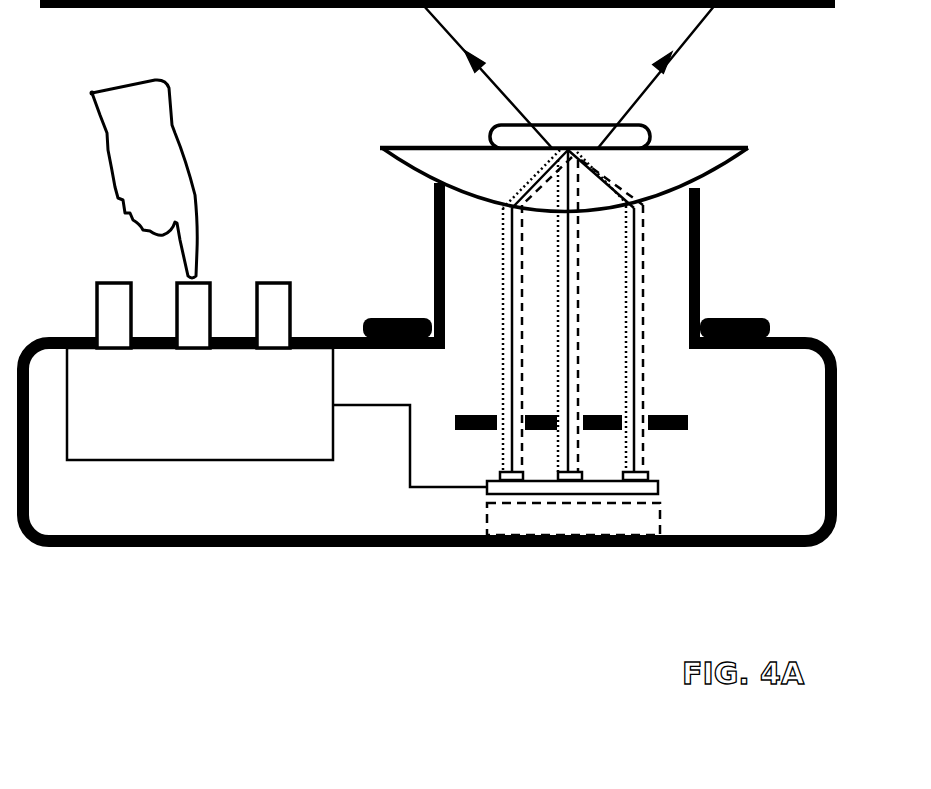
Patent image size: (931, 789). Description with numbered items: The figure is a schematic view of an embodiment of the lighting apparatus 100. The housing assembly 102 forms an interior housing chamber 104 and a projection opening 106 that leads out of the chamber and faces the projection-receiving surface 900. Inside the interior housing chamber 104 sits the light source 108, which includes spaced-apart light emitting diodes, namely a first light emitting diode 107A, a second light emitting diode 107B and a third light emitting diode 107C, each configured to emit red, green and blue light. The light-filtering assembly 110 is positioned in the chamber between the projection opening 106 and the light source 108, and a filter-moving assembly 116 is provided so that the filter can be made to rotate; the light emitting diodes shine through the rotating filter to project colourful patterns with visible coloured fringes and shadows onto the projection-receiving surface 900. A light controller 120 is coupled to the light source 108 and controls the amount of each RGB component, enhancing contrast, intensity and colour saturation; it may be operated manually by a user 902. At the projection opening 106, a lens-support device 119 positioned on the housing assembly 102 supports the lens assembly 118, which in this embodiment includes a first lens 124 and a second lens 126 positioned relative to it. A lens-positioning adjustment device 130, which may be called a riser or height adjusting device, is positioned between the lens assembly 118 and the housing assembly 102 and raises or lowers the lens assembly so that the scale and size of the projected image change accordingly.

The lighting apparatus 100 is at (353, 645).
The housing assembly 102 is at (428, 547).
The interior housing chamber 104 is at (118, 505).
The projection opening 106 is at (497, 375).
The first light emitting diode 107A is at (636, 494).
The second light emitting diode 107B is at (570, 494).
The third light emitting diode 107C is at (512, 494).
The light source 108 is at (660, 488).
The light-filtering assembly 110 is at (690, 422).
The filter-moving assembly 116 is at (660, 519).
The lens assembly 118 is at (310, 73).
The lens-support device 119 is at (363, 332).
The light controller 120 is at (193, 428).
The first lens 124 is at (443, 147).
The second lens 126 is at (650, 137).
The lens-positioning adjustment device 130 is at (702, 243).
The projection-receiving surface 900 is at (182, 7).
The user 902 is at (178, 185).